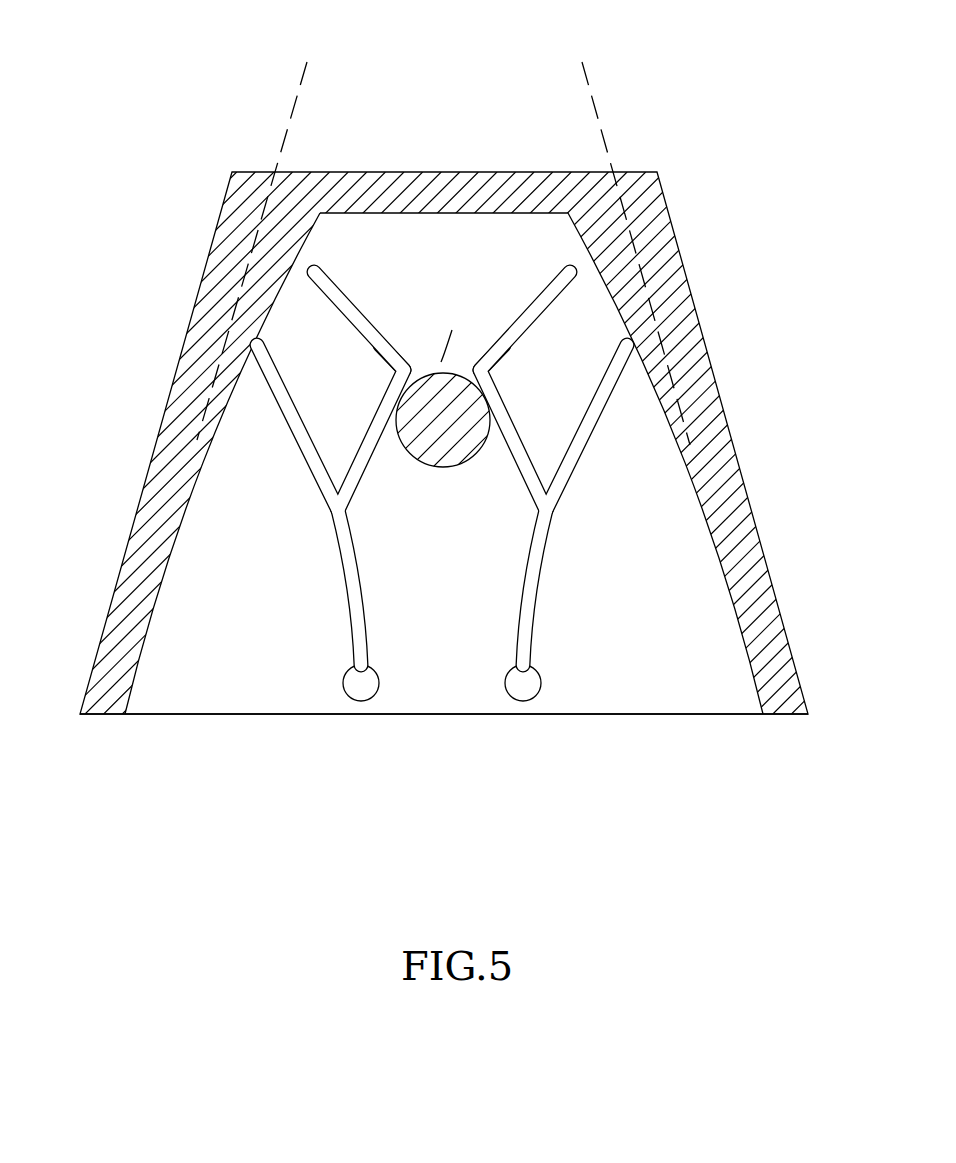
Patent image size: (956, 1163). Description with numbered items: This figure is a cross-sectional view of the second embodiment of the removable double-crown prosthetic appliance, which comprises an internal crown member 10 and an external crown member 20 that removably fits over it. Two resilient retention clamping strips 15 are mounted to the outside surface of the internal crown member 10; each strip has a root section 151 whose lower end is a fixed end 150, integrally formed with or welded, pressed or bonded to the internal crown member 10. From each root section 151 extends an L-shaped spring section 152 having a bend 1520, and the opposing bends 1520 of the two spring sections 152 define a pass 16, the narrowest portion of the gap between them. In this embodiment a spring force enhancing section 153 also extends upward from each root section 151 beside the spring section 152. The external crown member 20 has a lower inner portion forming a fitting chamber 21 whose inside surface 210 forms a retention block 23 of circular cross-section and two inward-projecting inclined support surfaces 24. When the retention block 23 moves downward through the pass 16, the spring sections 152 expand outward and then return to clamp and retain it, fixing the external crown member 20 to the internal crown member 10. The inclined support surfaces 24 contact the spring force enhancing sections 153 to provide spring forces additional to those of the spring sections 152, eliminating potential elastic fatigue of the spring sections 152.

The internal crown member 10 is at (478, 457).
The resilient retention clamping strip 15 is at (343, 506).
The fixed end 150 is at (365, 690).
The root section 151 is at (348, 580).
The spring section 152 is at (373, 327).
The spring force enhancing section 153 is at (305, 448).
The bend 1520 is at (415, 375).
The pass 16 is at (452, 330).
The external crown member 20 is at (217, 174).
The fitting chamber 21 is at (640, 672).
The inside surface 210 is at (138, 648).
The retention block 23 is at (447, 427).
The inclined support surface 24 is at (273, 268).